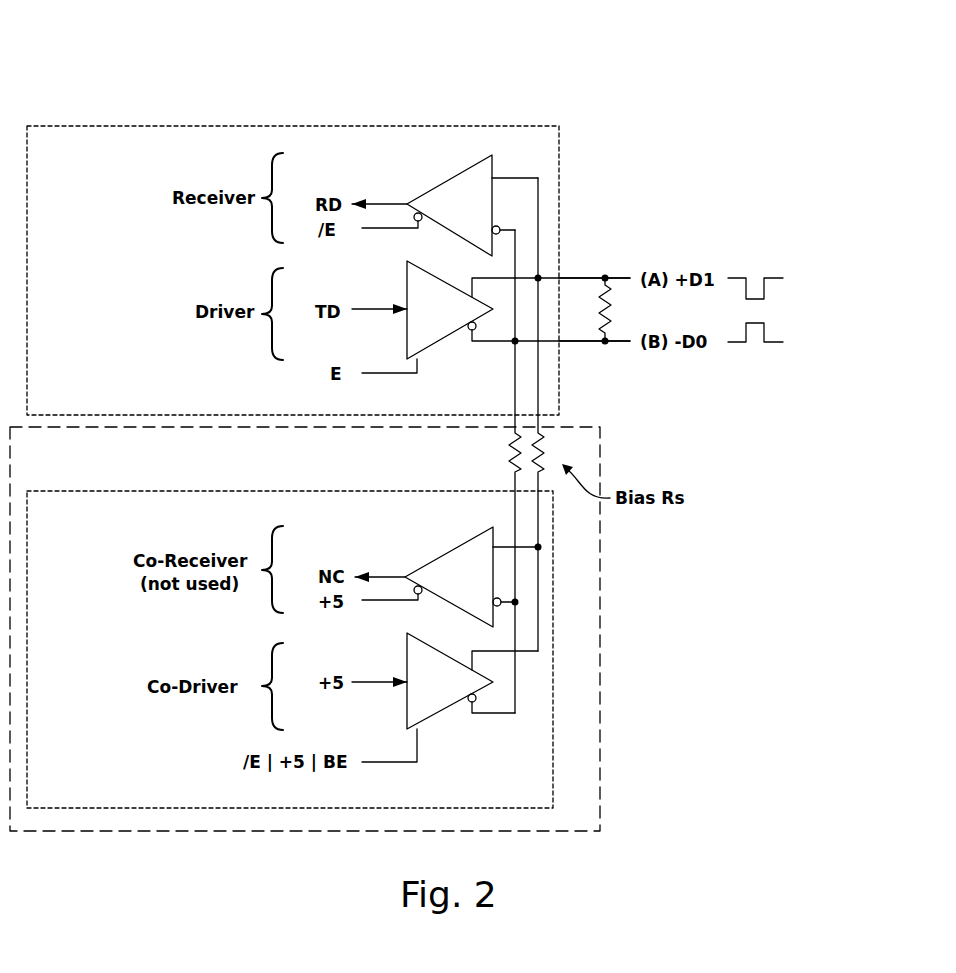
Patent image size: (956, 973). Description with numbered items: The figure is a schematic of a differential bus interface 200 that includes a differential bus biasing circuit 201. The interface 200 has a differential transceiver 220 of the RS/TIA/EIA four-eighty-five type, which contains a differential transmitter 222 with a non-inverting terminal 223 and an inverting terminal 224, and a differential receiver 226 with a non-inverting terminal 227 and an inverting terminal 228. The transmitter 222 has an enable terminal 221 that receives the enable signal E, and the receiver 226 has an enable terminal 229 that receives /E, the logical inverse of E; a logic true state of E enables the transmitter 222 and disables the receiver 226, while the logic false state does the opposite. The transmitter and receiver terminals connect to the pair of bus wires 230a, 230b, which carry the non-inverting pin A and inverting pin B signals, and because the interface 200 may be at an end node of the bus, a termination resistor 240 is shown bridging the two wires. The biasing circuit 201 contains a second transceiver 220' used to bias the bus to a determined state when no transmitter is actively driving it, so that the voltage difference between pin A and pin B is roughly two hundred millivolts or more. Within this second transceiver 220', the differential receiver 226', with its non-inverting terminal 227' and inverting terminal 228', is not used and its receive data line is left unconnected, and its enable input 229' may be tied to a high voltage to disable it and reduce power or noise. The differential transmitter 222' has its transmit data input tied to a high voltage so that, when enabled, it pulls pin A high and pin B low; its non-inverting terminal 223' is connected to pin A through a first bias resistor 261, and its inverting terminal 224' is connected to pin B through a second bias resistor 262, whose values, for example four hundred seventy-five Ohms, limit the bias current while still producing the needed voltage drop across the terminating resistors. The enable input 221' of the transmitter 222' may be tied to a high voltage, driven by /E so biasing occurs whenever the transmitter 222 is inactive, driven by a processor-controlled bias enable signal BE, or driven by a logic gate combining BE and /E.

The differential bus interface 200 is at (500, 62).
The differential bus biasing circuit 201 is at (600, 700).
The differential transceiver 220 is at (293, 238).
The second transceiver 220' is at (290, 624).
The enable terminal 221 is at (414, 384).
The differential transmitter 222 is at (420, 310).
The non-inverting terminal 223 is at (535, 271).
The inverting terminal 224 is at (540, 352).
The differential receiver 226 is at (448, 197).
The non-inverting terminal 227 is at (516, 159).
The inverting terminal 228 is at (513, 211).
The enable terminal 229 is at (392, 234).
The wire 230a is at (593, 278).
The wire 230b is at (583, 342).
The termination resistor 240 is at (612, 289).
The first bias resistor 261 is at (542, 435).
The second bias resistor 262 is at (510, 445).
The enable input 221' is at (417, 761).
The differential transmitter 222' is at (419, 681).
The non-inverting terminal 223' is at (483, 643).
The inverting terminal 224' is at (482, 725).
The differential receiver 226' is at (447, 569).
The non-inverting terminal 227' is at (505, 522).
The inverting terminal 228' is at (545, 575).
The enable input 229' is at (392, 607).